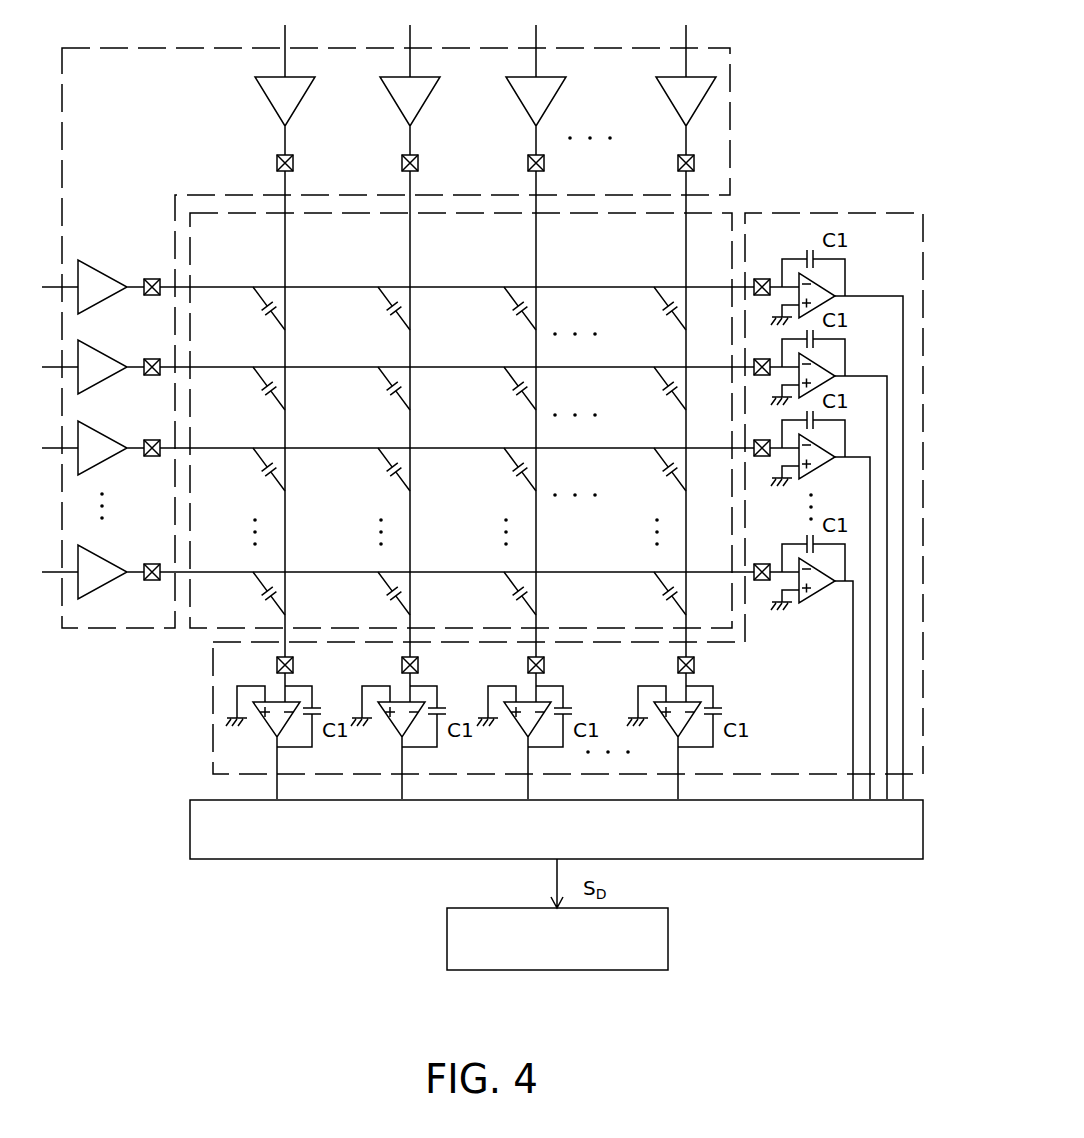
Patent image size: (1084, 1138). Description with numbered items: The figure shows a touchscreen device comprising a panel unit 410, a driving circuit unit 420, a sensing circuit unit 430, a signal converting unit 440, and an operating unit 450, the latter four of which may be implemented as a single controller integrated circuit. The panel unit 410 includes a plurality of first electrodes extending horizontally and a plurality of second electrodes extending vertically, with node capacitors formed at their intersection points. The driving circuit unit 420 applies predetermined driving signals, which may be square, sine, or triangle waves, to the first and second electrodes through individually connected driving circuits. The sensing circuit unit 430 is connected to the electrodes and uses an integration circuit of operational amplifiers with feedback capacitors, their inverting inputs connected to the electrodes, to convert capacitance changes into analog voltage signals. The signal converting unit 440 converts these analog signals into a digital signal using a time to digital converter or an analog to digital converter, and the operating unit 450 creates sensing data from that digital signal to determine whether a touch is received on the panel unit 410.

The panel unit 410 is at (195, 628).
The driving circuit unit 420 is at (730, 90).
The sensing circuit unit 430 is at (213, 717).
The signal converting unit 440 is at (265, 860).
The operating unit 450 is at (668, 940).